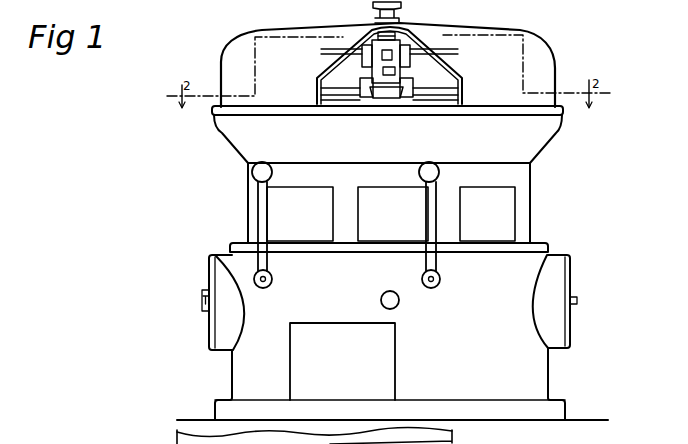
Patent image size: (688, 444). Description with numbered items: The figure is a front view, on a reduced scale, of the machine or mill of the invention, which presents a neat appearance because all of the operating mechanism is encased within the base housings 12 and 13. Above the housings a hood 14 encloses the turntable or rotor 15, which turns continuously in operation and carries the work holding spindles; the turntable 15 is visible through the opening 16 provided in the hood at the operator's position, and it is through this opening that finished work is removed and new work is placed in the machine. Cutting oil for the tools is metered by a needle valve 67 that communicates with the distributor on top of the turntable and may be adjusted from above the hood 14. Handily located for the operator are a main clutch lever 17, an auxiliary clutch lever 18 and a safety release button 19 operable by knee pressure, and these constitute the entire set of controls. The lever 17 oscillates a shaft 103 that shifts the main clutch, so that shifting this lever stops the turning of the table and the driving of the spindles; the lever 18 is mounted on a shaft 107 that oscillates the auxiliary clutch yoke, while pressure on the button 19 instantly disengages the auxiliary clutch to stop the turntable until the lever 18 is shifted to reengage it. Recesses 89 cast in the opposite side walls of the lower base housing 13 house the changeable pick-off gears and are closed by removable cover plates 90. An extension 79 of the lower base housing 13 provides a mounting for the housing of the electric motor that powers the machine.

The base housing 12 is at (525, 190).
The lower base housing 13 is at (545, 372).
The hood 14 is at (538, 53).
The turntable 15 is at (440, 85).
The opening 16 is at (320, 68).
The main clutch lever 17 is at (428, 217).
The auxiliary clutch lever 18 is at (259, 217).
The safety release button 19 is at (384, 296).
The needle valve 67 is at (401, 5).
The extension of the lower base housing 79 is at (453, 437).
The recesses 89 is at (550, 270).
The removable cover plates 90 is at (568, 281).
The shaft 103 is at (440, 277).
The shaft 107 is at (272, 277).